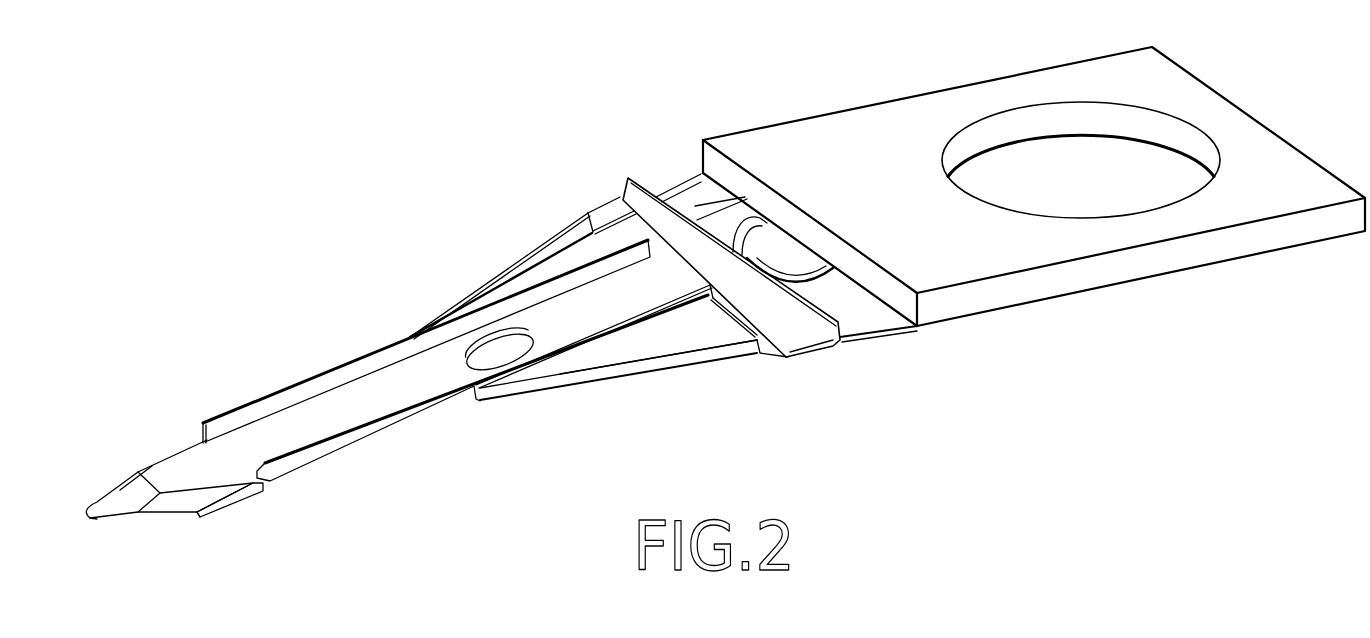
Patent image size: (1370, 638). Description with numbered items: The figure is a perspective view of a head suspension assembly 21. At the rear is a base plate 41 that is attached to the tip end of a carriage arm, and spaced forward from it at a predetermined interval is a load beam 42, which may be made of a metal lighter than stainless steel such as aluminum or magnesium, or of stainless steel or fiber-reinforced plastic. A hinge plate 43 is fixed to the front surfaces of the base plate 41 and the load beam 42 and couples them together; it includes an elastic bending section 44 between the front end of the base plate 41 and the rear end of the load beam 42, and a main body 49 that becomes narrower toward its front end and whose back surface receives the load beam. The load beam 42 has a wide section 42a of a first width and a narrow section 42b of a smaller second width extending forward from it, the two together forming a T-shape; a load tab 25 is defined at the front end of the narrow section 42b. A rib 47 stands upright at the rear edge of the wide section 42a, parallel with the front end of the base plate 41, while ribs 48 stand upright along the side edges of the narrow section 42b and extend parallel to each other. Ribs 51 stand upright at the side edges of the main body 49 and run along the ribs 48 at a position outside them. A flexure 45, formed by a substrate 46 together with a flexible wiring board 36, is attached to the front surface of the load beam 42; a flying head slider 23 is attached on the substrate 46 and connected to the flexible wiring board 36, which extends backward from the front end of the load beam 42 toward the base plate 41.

The head suspension assembly 21 is at (437, 69).
The flying head slider 23 is at (222, 507).
The load tab 25 is at (98, 518).
The flexible wiring board 36 is at (757, 219).
The base plate 41 is at (1298, 163).
The load beam 42 is at (437, 357).
The wide section 42a is at (609, 211).
The narrow section 42b is at (267, 430).
The hinge plate 43 is at (757, 418).
The elastic bending section 44 is at (690, 188).
The flexure 45 is at (123, 404).
The substrate 46 is at (168, 512).
The rib 47 is at (643, 165).
The ribs 48 is at (378, 353).
The main body 49 is at (660, 338).
The ribs 51 is at (477, 302).